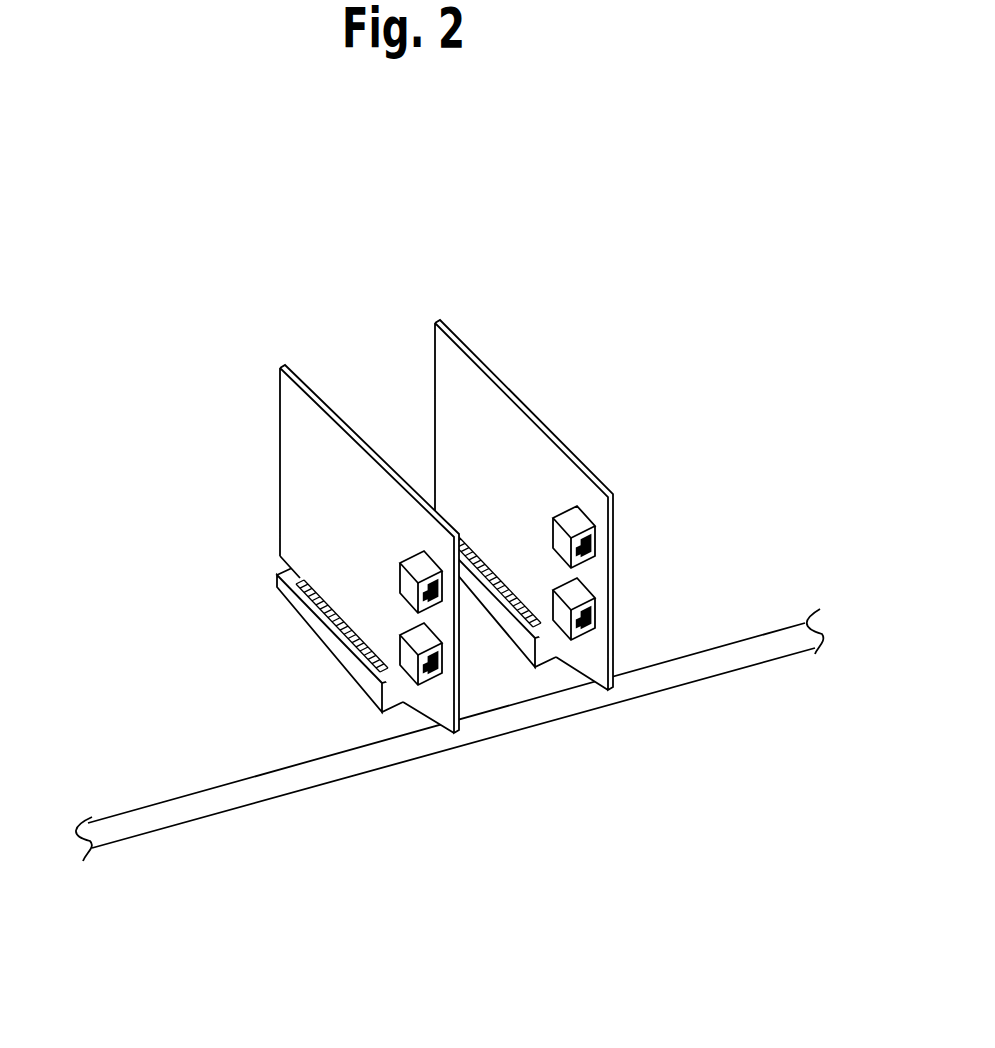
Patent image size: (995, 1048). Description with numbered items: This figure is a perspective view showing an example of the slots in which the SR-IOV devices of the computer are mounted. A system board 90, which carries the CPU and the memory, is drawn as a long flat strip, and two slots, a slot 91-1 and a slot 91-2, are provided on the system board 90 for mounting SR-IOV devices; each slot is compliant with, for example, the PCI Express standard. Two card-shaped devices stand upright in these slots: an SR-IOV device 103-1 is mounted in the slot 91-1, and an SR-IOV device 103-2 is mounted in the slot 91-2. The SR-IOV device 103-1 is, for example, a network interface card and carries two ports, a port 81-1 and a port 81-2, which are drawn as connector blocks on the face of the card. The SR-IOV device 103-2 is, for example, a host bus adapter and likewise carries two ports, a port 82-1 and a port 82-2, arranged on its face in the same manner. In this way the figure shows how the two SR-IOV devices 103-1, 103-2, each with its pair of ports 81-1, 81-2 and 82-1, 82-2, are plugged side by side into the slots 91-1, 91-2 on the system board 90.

The system board 90 is at (214, 812).
The slot (#1) 91-1 is at (362, 690).
The slot (#2) 91-2 is at (531, 660).
The SR-IOV device #1 103-1 is at (283, 368).
The SR-IOV device #2 103-2 is at (508, 395).
The port (#1) 81-1 is at (427, 665).
The port (#2) 81-2 is at (425, 598).
The port (#1) 82-1 is at (598, 620).
The port (#2) 82-2 is at (598, 548).